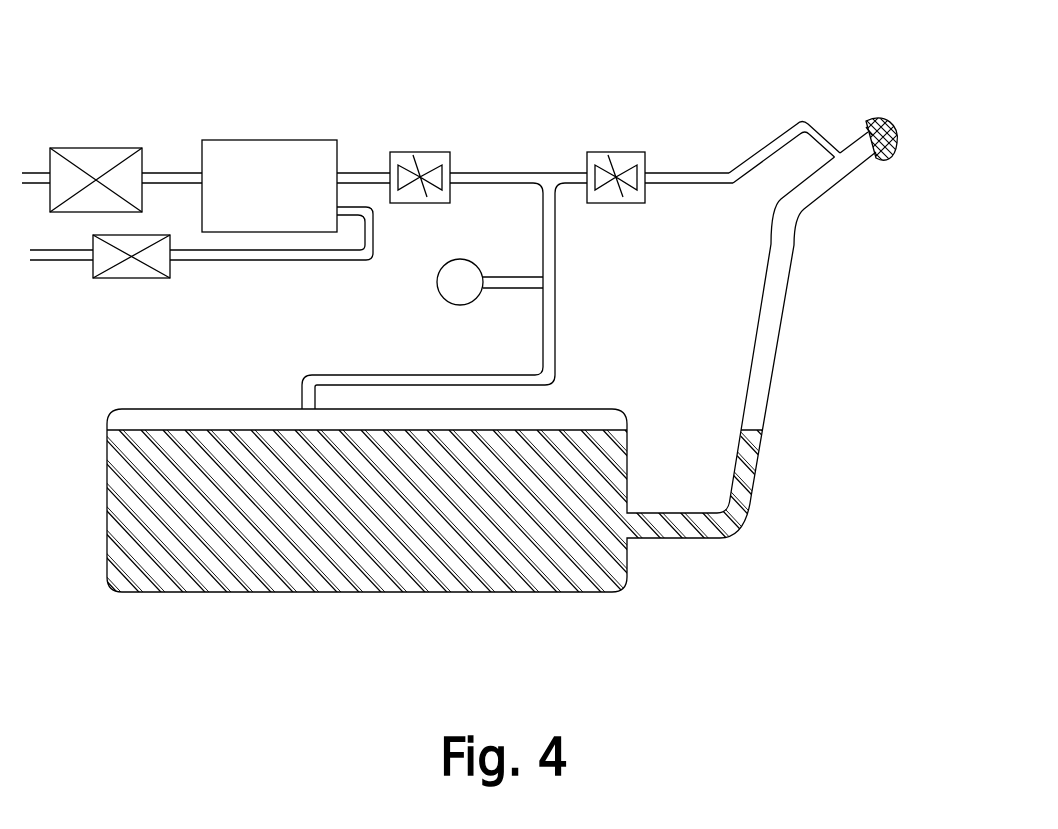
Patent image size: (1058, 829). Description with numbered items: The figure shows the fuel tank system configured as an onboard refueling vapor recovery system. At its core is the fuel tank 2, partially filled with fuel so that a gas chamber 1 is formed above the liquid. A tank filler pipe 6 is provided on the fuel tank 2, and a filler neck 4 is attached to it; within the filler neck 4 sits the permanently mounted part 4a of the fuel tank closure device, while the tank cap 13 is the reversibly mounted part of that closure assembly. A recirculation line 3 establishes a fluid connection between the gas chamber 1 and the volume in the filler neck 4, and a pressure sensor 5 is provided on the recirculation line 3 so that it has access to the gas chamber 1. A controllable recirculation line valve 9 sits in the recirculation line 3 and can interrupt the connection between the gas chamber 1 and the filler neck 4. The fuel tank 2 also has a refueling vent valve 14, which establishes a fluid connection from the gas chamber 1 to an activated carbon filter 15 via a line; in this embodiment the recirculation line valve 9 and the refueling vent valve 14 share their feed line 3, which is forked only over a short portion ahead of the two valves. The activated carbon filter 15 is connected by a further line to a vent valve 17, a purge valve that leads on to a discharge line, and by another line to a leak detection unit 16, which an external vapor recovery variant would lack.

The gas chamber 1 is at (147, 418).
The fuel tank 2 is at (617, 596).
The recirculation line 3 is at (673, 188).
The filler neck 4 is at (877, 164).
The permanently mounted part of the fuel tank closure device 4a is at (864, 126).
The pressure sensor 5 is at (437, 280).
The tank filler pipe 6 is at (783, 308).
The recirculation line valve 9 is at (641, 149).
The tank cap 13 is at (891, 120).
The refueling vent valve 14 is at (425, 151).
The activated carbon filter 15 is at (267, 140).
The leak detection unit 16 is at (75, 147).
The vent valve 17 is at (143, 278).